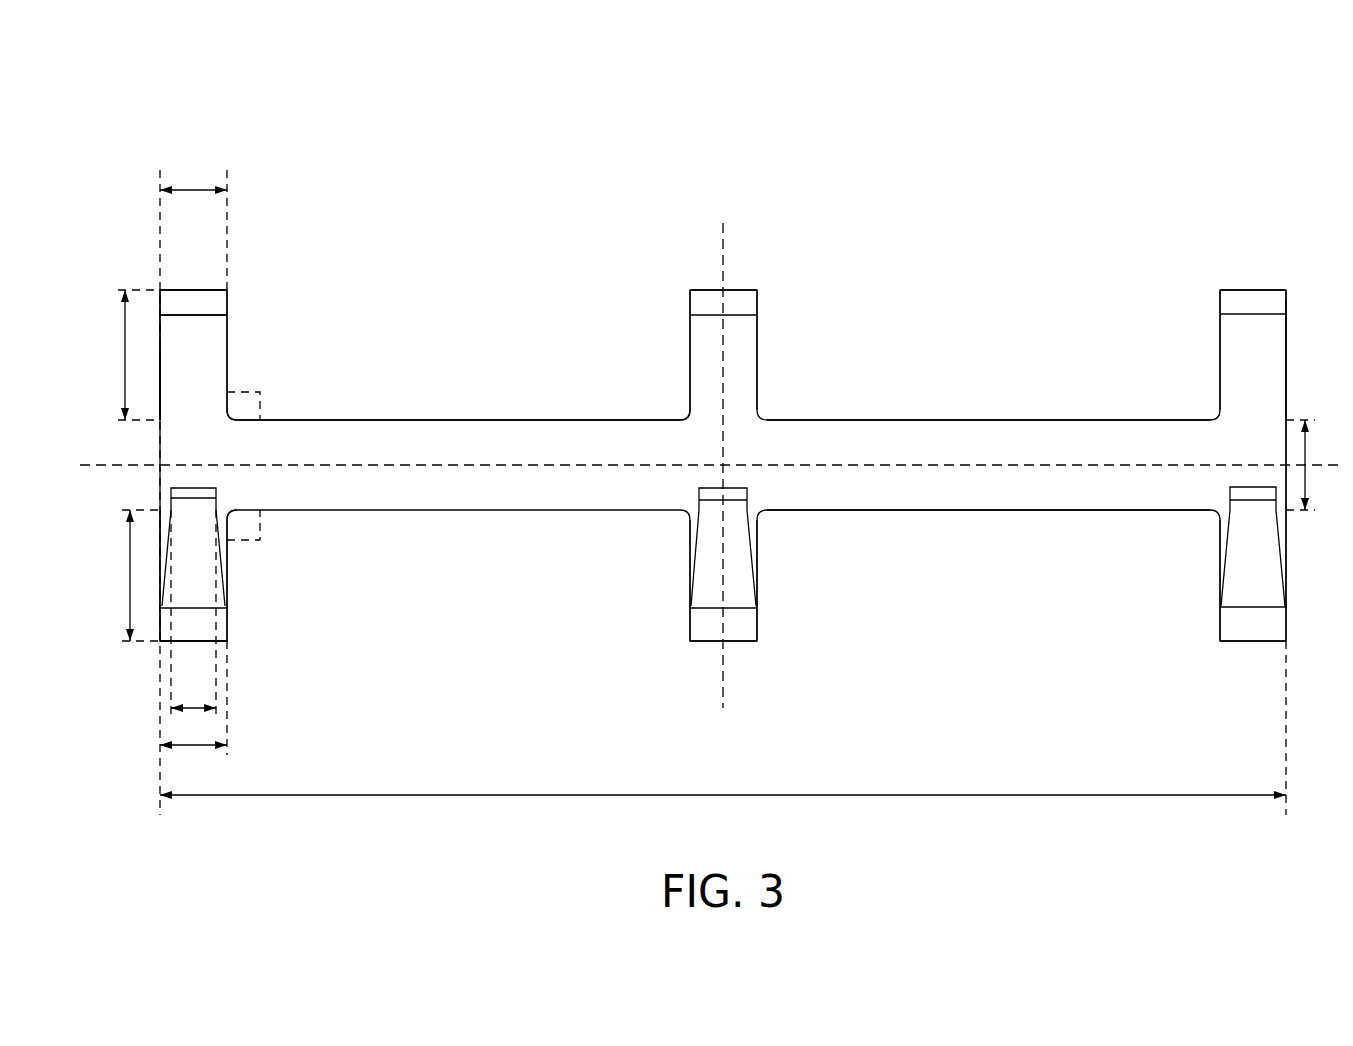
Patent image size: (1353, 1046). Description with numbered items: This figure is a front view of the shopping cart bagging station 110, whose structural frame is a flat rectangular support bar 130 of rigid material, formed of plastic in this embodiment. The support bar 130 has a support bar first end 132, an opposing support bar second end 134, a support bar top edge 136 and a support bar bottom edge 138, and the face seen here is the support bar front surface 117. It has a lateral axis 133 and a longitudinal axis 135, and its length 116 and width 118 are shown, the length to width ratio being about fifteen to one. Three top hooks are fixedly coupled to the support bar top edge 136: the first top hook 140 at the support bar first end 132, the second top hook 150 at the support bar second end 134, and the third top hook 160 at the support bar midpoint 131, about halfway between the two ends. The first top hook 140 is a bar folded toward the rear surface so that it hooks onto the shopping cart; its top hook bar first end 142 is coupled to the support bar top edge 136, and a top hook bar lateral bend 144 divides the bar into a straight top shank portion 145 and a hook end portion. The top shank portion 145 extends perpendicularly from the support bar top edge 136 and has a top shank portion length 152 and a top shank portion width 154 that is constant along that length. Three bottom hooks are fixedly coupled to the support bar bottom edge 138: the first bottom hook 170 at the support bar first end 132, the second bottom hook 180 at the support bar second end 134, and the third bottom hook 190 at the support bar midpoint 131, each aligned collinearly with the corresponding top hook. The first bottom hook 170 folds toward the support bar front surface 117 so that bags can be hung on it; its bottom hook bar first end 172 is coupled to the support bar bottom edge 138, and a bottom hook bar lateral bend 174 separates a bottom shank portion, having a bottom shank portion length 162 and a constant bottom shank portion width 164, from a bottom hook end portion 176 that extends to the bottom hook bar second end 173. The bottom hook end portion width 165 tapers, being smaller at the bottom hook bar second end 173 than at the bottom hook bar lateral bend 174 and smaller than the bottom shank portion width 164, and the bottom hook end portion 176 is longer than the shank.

The shopping cart bagging station 110 is at (588, 136).
The length 116 is at (893, 795).
The support bar front surface 117 is at (711, 480).
The width 118 is at (1307, 447).
The support bar 130 is at (463, 432).
The support bar midpoint 131 is at (720, 455).
The support bar first end 132 is at (150, 405).
The lateral axis 133 is at (723, 262).
The support bar second end 134 is at (1305, 355).
The longitudinal axis 135 is at (1320, 468).
The support bar top edge 136 is at (988, 420).
The support bar bottom edge 138 is at (960, 510).
The first top hook 140 is at (198, 228).
The top hook bar first end 142 is at (193, 418).
The top hook bar lateral bend 144 is at (203, 290).
The top shank portion 145 is at (205, 345).
The second top hook 150 is at (1235, 338).
The top shank portion length 152 is at (123, 340).
The top shank portion width 154 is at (195, 190).
The third top hook 160 is at (705, 304).
The bottom shank portion length 162 is at (130, 580).
The bottom shank portion width 164 is at (193, 745).
The bottom hook end portion width 165 is at (193, 708).
The first bottom hook 170 is at (275, 633).
The bottom hook bar first end 172 is at (228, 513).
The bottom hook bar second end 173 is at (195, 488).
The bottom hook bar lateral bend 174 is at (188, 645).
The bottom hook end portion 176 is at (200, 592).
The second bottom hook 180 is at (1233, 630).
The third bottom hook 190 is at (740, 628).